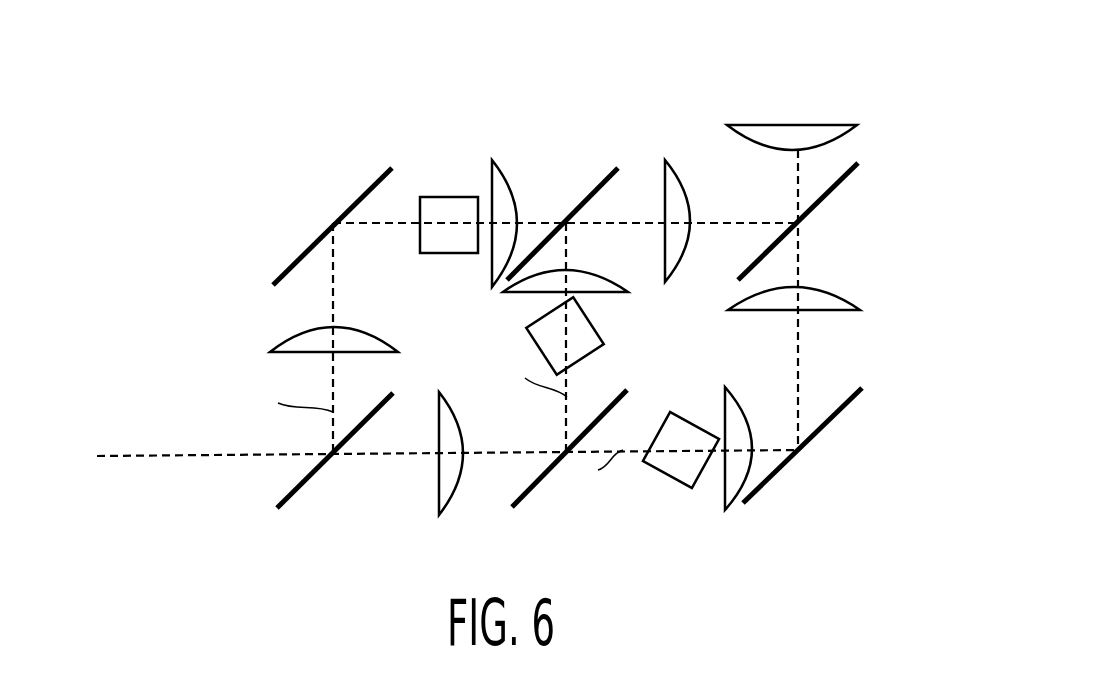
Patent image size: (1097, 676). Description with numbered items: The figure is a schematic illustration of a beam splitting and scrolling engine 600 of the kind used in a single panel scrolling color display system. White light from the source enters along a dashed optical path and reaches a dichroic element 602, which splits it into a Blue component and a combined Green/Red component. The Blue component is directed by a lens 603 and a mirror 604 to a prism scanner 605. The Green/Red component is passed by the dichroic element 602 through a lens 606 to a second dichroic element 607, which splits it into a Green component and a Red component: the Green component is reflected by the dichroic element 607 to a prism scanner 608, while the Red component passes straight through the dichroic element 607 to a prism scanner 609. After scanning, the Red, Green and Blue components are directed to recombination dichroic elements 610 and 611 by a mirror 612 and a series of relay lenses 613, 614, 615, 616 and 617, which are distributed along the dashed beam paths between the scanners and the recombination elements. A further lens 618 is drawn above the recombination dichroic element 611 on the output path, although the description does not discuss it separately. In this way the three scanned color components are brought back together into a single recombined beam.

The beam splitting and scrolling engine 600 is at (270, 125).
The dichroic element 602 is at (287, 492).
The lens 603 is at (292, 333).
The mirror 604 is at (290, 263).
The prism scanner 605 is at (447, 197).
The lens 606 is at (440, 493).
The dichroic element 607 is at (530, 485).
The prism scanner 608 is at (603, 332).
The prism scanner 609 is at (672, 482).
The recombination dichroic element 610 is at (608, 170).
The recombination dichroic element 611 is at (835, 187).
The mirror 612 is at (770, 483).
The relay lens 613 is at (725, 497).
The relay lens 614 is at (833, 293).
The relay lens 615 is at (682, 173).
The relay lens 616 is at (503, 170).
The relay lens 617 is at (582, 270).
The lens 618 is at (832, 122).